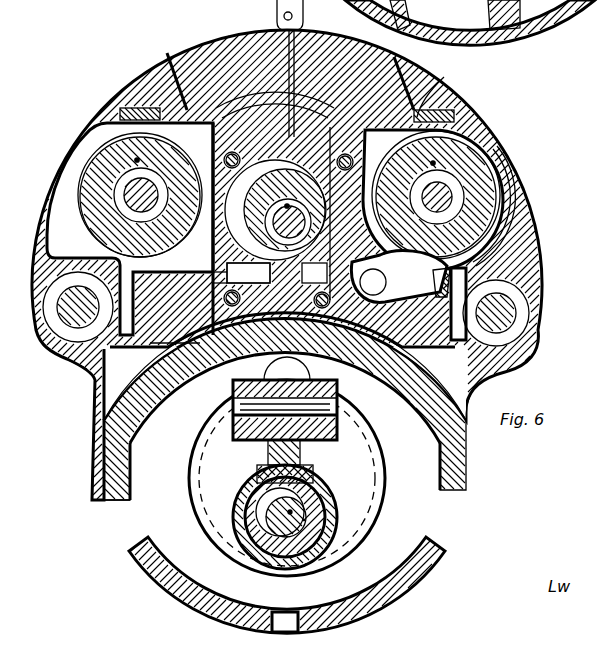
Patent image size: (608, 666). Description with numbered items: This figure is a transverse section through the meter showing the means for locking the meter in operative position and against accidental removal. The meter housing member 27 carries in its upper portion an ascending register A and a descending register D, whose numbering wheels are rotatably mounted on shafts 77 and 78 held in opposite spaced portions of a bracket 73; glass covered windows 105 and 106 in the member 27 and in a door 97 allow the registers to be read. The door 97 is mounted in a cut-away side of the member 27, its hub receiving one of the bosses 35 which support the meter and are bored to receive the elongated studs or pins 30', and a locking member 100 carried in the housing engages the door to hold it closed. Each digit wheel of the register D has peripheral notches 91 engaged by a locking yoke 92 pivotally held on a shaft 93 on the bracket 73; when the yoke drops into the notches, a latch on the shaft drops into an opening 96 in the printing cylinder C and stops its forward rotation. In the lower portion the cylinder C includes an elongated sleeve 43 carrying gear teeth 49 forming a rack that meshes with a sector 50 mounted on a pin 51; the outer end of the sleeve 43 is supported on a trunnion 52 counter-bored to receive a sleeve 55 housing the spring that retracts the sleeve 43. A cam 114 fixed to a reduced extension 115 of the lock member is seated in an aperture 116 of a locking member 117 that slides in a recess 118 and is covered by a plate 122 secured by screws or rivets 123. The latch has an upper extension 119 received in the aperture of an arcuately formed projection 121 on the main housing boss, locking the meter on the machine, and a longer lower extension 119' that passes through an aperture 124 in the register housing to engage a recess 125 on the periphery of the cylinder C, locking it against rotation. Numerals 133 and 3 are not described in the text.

The meter housing member 27 is at (22, 240).
The opening in the printing cylinder 96 is at (488, 14).
The locking member 100 is at (278, 12).
The ascending register A is at (105, 138).
The shaft 77 is at (132, 194).
The glass covered window 105 is at (140, 105).
The glass covered window 106 is at (432, 108).
The aperture 116 is at (222, 187).
The extension 119 is at (221, 84).
The arcuately formed projection 121 is at (245, 145).
The screws or rivets 123 is at (183, 110).
The line 133 is at (444, 77).
The descending register D is at (470, 150).
The shaft 78 is at (440, 197).
The bracket 73 is at (414, 289).
The shaft 93 is at (414, 341).
The studs or pins 30' is at (313, 338).
The bosses 35 is at (45, 320).
The notches 91 is at (534, 220).
The locking yoke 92 is at (491, 259).
The door 97 is at (537, 269).
The cam 114 is at (213, 242).
The reduced extension 115 is at (208, 265).
The locking member 117 is at (215, 280).
The recess 118 is at (232, 306).
The extension 119' is at (356, 356).
The ring member 3 is at (354, 456).
The aperture 124 is at (230, 400).
The pin 51 is at (357, 442).
The sector 50 is at (347, 454).
The gear teeth 49 is at (261, 421).
The plate 122 is at (320, 407).
The sleeve 43 is at (233, 501).
The trunnion 52 is at (304, 514).
The sleeve 55 is at (260, 514).
The recess 125 is at (371, 614).
The printing cylinder C is at (142, 467).